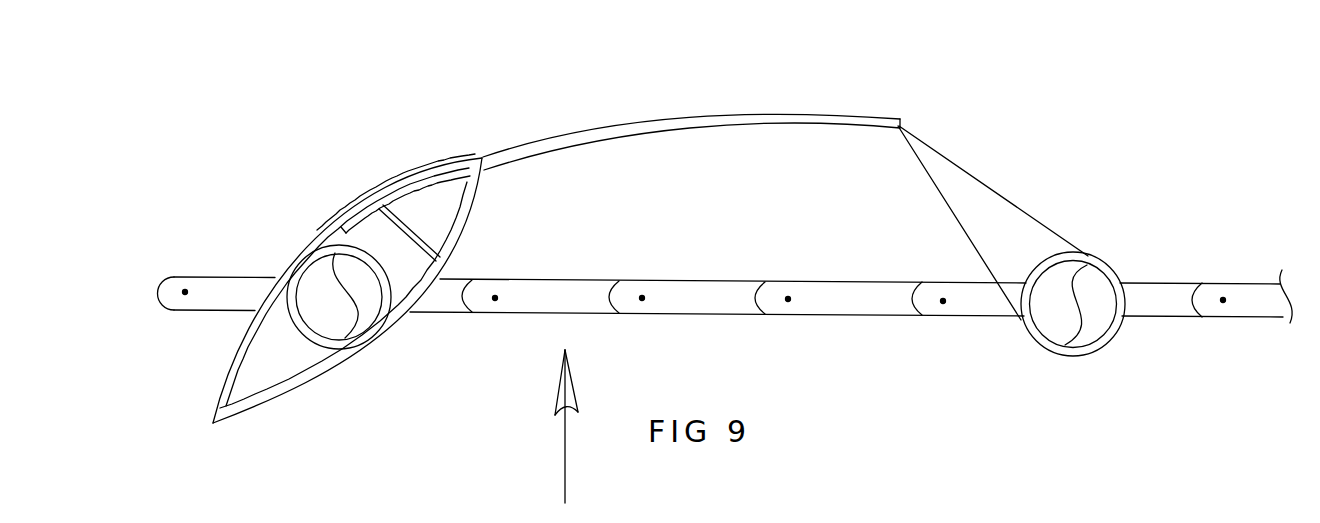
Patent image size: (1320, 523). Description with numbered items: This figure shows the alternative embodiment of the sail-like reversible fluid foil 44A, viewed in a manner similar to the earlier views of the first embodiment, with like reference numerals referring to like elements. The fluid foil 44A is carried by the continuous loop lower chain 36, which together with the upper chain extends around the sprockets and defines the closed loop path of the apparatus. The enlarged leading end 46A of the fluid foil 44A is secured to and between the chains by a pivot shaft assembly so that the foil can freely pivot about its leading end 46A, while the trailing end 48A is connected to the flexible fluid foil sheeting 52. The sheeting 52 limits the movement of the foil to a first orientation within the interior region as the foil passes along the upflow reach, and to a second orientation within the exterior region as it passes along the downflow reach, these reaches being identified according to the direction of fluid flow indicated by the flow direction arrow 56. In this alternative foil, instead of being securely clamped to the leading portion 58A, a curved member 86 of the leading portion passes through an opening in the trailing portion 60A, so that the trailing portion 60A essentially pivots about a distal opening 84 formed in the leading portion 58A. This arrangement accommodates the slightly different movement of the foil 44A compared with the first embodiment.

The lower chain 36 is at (807, 317).
The fluid foil 44A is at (490, 128).
The leading end 46A is at (222, 385).
The trailing end 48A is at (900, 120).
The fluid foil sheeting 52 is at (952, 210).
The flow direction arrow 56 is at (570, 468).
The leading portion 58A is at (325, 222).
The trailing portion 60A is at (688, 118).
The distal opening 84 is at (472, 158).
The curved member 86 is at (425, 237).